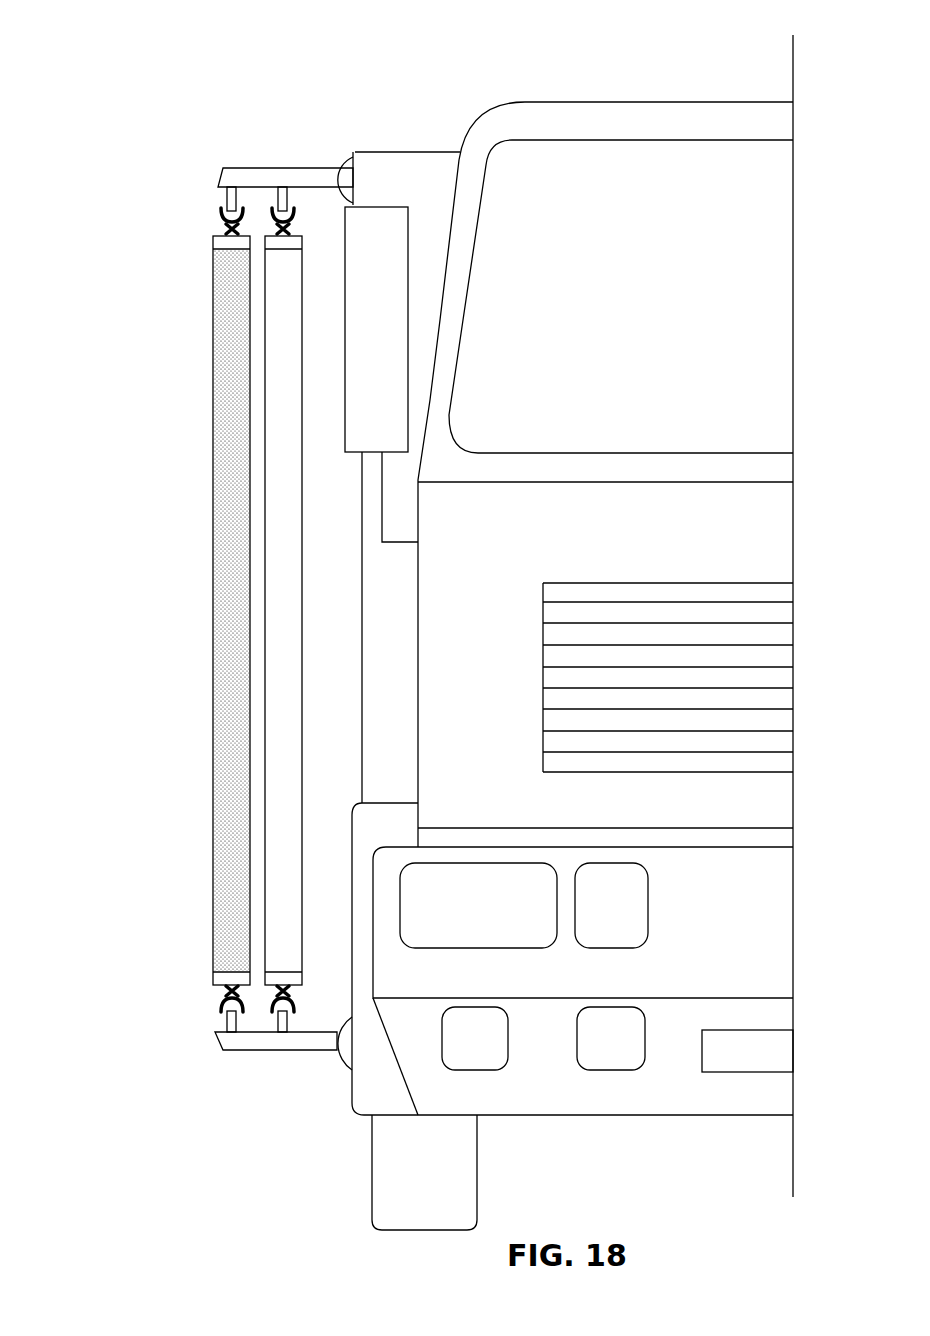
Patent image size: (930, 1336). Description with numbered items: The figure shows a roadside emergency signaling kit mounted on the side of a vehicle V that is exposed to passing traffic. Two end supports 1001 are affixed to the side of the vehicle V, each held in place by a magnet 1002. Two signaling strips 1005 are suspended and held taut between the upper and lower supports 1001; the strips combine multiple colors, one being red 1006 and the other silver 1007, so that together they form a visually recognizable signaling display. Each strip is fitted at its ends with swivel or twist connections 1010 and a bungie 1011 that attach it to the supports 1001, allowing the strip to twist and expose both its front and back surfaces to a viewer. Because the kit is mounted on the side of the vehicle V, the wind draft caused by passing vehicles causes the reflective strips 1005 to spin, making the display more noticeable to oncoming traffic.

The vehicle V is at (553, 72).
The supports 1001 is at (265, 170).
The magnet 1002 is at (345, 160).
The signaling strips 1005 is at (249, 557).
The red 1006 is at (230, 497).
The silver 1007 is at (282, 430).
The swivel or twist connections 1010 is at (225, 232).
The bungie 1011 is at (222, 200).